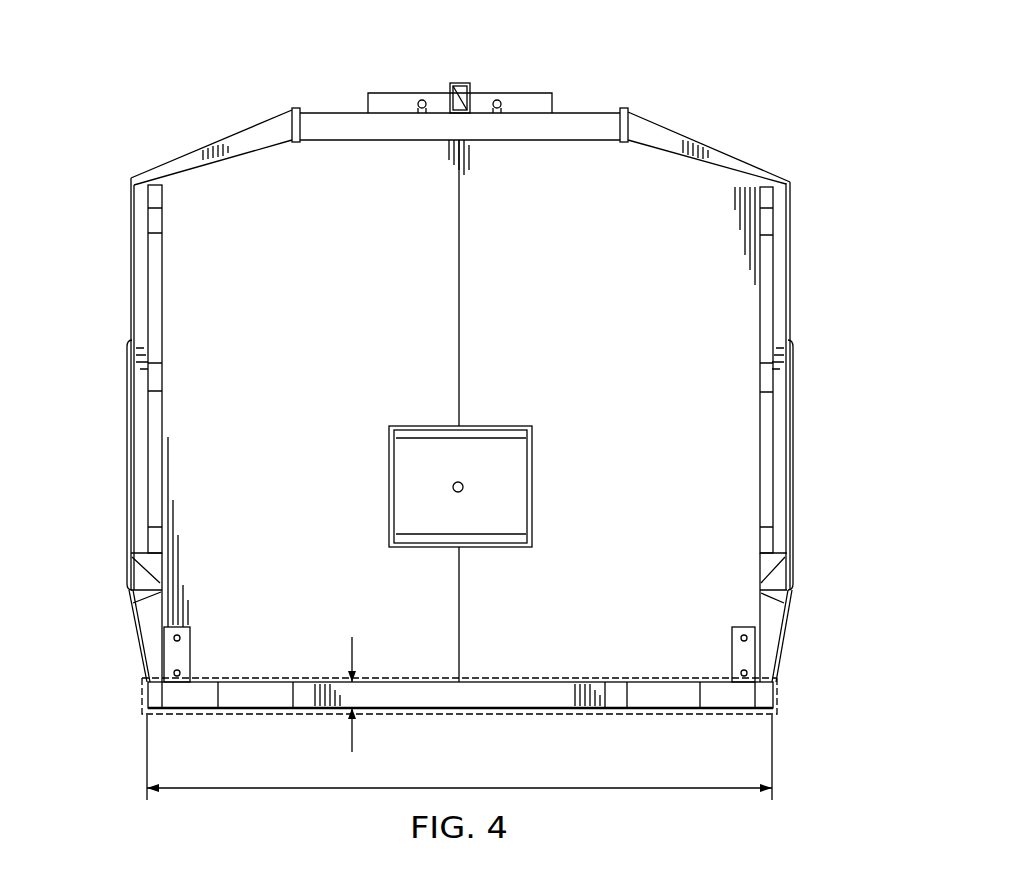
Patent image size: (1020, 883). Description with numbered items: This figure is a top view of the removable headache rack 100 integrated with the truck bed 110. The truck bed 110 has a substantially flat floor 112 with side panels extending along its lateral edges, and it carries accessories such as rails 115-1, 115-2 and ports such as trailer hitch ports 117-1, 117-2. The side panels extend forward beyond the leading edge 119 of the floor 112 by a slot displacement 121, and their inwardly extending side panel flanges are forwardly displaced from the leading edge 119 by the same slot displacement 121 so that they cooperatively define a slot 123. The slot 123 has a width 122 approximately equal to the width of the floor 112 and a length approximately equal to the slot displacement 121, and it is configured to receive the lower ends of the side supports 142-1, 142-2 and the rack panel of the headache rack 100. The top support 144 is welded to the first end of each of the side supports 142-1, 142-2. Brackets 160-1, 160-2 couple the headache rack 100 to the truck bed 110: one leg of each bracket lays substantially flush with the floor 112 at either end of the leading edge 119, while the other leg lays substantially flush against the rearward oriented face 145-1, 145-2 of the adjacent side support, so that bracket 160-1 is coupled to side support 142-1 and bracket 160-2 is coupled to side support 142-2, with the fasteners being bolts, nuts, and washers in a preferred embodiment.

The headache rack 100 is at (133, 727).
The truck bed 110 is at (712, 140).
The floor 112 is at (580, 287).
The rail 115-1 is at (791, 430).
The rail 115-2 is at (128, 430).
The trailer hitch port 117-1 is at (488, 470).
The trailer hitch port 117-2 is at (458, 83).
The leading edge 119 is at (413, 682).
The slot displacement 121 is at (352, 737).
The width 122 is at (610, 790).
The slot 123 is at (552, 716).
The side support 142-1 is at (667, 698).
The side support 142-2 is at (247, 698).
The top support 144 is at (463, 698).
The rearward oriented face 145-1 is at (725, 680).
The rearward oriented face 145-2 is at (192, 681).
The bracket 160-1 is at (747, 657).
The bracket 160-2 is at (163, 657).